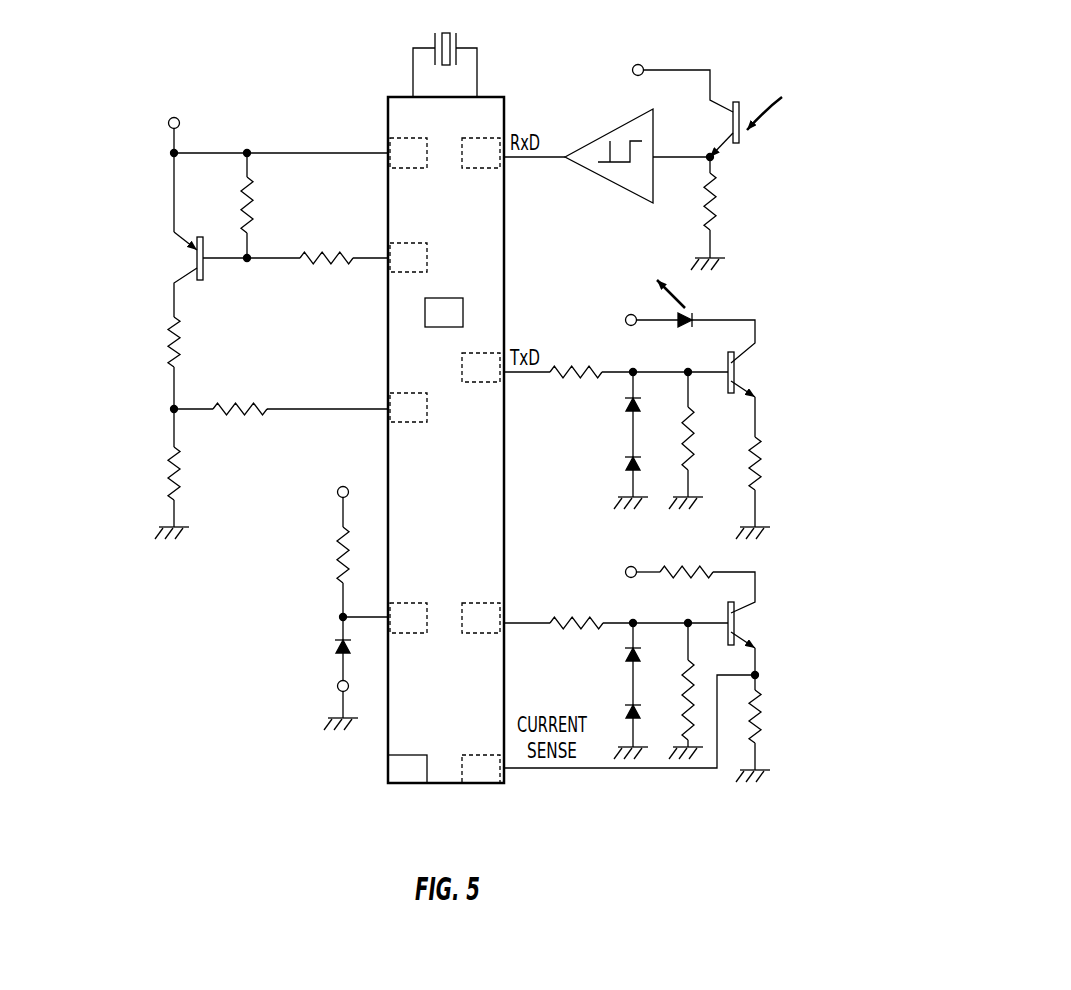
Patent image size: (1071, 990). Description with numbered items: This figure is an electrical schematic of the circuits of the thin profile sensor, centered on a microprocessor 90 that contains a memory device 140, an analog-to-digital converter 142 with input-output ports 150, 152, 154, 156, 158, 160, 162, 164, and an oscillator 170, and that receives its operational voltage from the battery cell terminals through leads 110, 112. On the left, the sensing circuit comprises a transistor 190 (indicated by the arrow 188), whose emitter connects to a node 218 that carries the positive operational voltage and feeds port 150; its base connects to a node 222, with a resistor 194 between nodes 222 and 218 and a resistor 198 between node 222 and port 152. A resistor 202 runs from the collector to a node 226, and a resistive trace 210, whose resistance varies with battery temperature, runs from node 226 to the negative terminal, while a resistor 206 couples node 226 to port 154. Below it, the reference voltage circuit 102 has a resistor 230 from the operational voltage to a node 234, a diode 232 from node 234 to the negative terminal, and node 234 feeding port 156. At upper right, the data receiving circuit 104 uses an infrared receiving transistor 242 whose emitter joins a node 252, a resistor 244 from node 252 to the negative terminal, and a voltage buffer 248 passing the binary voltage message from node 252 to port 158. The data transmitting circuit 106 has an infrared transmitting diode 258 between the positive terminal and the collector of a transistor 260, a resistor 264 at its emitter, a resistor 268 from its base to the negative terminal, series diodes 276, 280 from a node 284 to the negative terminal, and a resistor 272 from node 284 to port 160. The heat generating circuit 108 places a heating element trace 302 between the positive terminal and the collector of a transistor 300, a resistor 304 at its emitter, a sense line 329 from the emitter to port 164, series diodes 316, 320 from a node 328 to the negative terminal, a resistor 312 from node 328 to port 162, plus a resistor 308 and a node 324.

The microprocessor 90 is at (504, 257).
The reference voltage circuit 102 is at (317, 594).
The data receiving circuit 104 is at (686, 152).
The data transmitting circuit 106 is at (692, 395).
The heat generating circuit 108 is at (692, 670).
The lead 110 is at (172, 138).
The lead 112 is at (172, 518).
The memory device 140 is at (403, 766).
The analog-to-digital converter 142 is at (447, 298).
The I/O port 150 is at (408, 153).
The I/O port 152 is at (408, 258).
The I/O port 154 is at (408, 408).
The I/O port 156 is at (408, 618).
The I/O port 158 is at (481, 153).
The I/O port 160 is at (481, 368).
The I/O port 162 is at (481, 618).
The I/O port 164 is at (481, 769).
The oscillator 170 is at (457, 42).
The transistor 188 is at (157, 222).
The transistor 190 is at (205, 270).
The resistor 194 is at (254, 198).
The resistor 198 is at (314, 254).
The resistor 202 is at (171, 338).
The resistor 206 is at (226, 400).
The resistive trace 210 is at (180, 460).
The node 218 is at (247, 150).
The node 222 is at (250, 262).
The node 226 is at (171, 410).
The resistor 230 is at (340, 545).
The diode 232 is at (336, 648).
The node 234 is at (340, 617).
The infrared receiving transistor 242 is at (740, 133).
The resistor 244 is at (716, 205).
The voltage buffer 248 is at (608, 183).
The node 252 is at (714, 160).
The infrared transmitting diode 258 is at (692, 312).
The transistor 260 is at (737, 375).
The resistor 264 is at (762, 452).
The resistor 268 is at (693, 435).
The resistor 272 is at (555, 365).
The diode 276 is at (628, 406).
The diode 280 is at (628, 462).
The node 284 is at (633, 365).
The transistor 300 is at (737, 627).
The heating element trace 302 is at (673, 562).
The resistor 304 is at (763, 710).
The resistor 308 is at (683, 688).
The resistor 312 is at (582, 615).
The diode 316 is at (628, 658).
The diode 320 is at (628, 714).
The node 324 is at (760, 672).
The node 328 is at (633, 618).
The sense line 329 is at (550, 769).